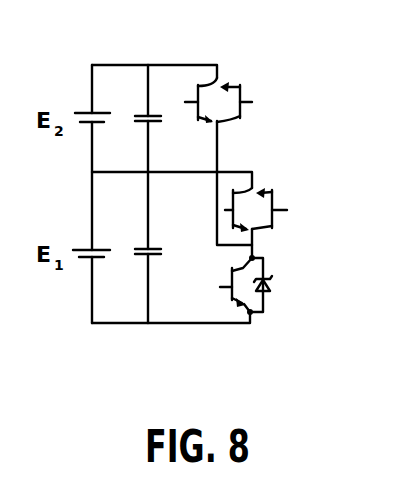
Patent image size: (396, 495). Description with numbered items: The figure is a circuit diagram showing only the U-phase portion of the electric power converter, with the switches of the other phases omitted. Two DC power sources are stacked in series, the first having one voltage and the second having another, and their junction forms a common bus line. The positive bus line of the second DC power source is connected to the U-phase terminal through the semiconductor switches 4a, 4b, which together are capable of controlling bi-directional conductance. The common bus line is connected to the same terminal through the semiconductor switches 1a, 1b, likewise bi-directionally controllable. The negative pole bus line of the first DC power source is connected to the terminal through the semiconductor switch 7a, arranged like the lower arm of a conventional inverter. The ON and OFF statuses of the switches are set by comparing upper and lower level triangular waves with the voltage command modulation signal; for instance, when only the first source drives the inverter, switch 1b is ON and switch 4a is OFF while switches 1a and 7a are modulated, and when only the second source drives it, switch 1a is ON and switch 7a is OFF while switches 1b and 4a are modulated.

The semiconductor switch 4a is at (196, 88).
The semiconductor switch 4b is at (251, 95).
The semiconductor switch 1a is at (231, 197).
The semiconductor switch 1b is at (285, 218).
The semiconductor switch 7a is at (214, 296).